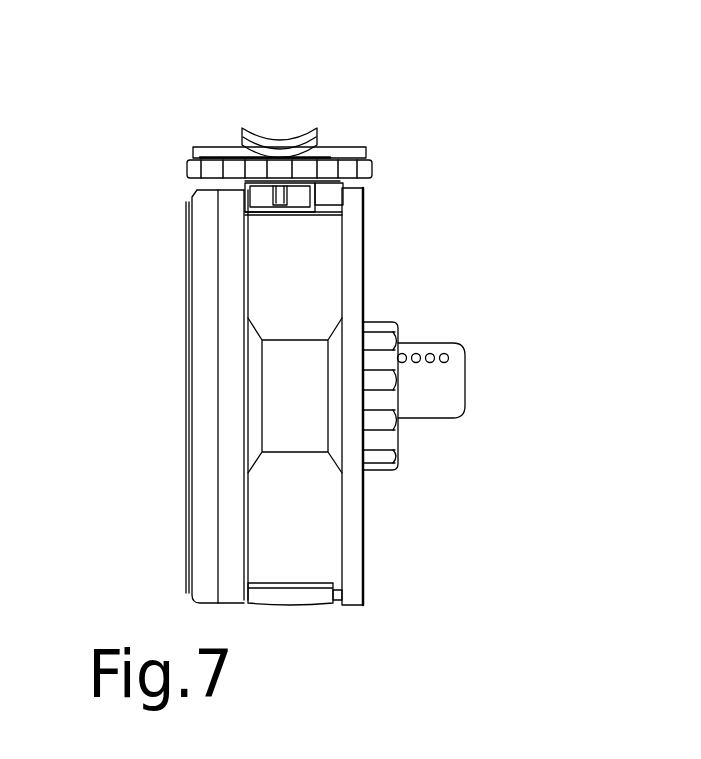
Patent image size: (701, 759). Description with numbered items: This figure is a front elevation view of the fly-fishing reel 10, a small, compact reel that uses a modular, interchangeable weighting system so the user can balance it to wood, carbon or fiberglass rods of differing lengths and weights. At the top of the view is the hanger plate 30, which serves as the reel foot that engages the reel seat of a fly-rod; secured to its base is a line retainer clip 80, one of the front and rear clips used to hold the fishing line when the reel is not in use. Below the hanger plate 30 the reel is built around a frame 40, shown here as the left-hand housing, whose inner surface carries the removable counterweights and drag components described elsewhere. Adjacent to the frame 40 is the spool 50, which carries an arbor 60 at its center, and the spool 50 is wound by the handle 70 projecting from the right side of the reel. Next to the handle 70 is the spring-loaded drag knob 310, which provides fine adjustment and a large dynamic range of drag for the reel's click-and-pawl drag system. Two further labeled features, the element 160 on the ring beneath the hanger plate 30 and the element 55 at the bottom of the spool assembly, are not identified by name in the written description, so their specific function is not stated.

The fly-fishing reel 10 is at (564, 165).
The hanger plate 30 is at (288, 137).
The knurled locking ring 160 is at (200, 167).
The line retainer clip 80 is at (283, 195).
The frame 40 is at (195, 287).
The spool 50 is at (387, 274).
The arbor 60 is at (297, 418).
The handle 70 is at (450, 390).
The drag knob 310 is at (400, 457).
The bottom bar 55 is at (317, 595).